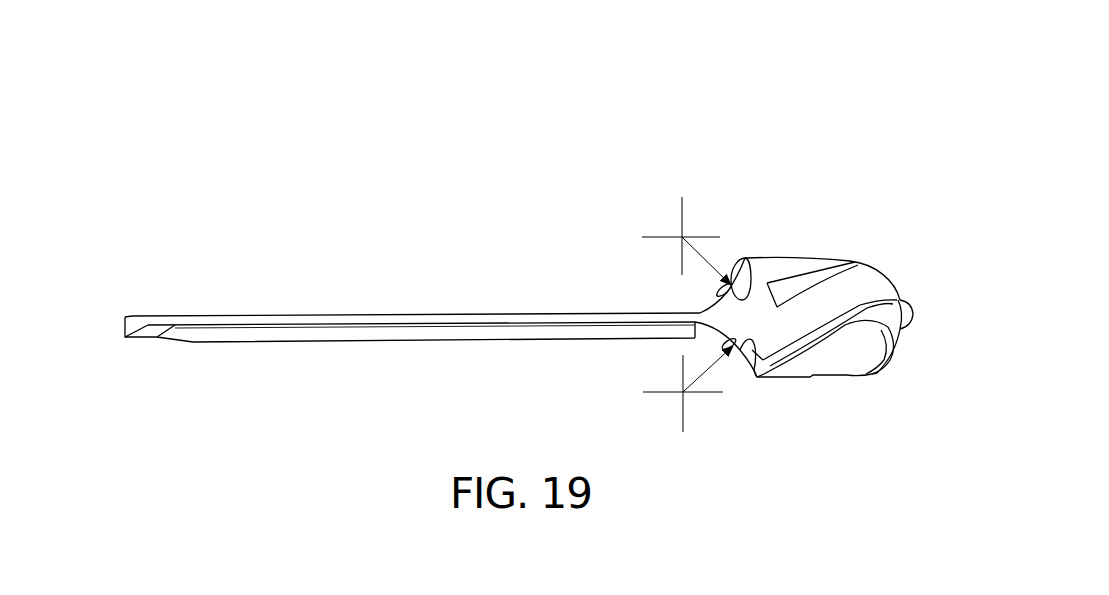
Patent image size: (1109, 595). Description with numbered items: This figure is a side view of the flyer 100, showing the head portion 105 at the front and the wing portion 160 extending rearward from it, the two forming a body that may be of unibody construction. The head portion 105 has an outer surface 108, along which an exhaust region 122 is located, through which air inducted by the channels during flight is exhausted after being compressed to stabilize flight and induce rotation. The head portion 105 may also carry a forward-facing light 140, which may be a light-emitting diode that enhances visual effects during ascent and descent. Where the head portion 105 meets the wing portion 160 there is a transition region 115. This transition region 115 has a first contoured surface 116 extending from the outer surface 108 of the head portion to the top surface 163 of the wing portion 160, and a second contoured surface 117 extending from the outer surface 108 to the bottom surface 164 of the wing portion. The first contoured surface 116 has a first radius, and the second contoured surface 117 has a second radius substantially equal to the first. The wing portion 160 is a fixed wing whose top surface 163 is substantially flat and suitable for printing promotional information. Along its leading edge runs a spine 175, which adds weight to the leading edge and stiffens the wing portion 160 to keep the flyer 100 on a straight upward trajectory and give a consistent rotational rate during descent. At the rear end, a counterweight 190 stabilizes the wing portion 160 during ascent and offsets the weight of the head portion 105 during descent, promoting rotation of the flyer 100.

The flyer 100 is at (196, 136).
The wing portion 160 is at (196, 246).
The counterweight 190 is at (130, 316).
The spine 175 is at (432, 312).
The top surface 163 is at (550, 312).
The bottom surface 164 is at (552, 323).
The transition region 115 is at (654, 223).
The first contoured surface 116 is at (730, 262).
The second contoured surface 117 is at (745, 362).
The outer surface 108 is at (783, 258).
The head portion 105 is at (876, 240).
The forward-facing light 140 is at (909, 315).
The exhaust region 122 is at (770, 292).